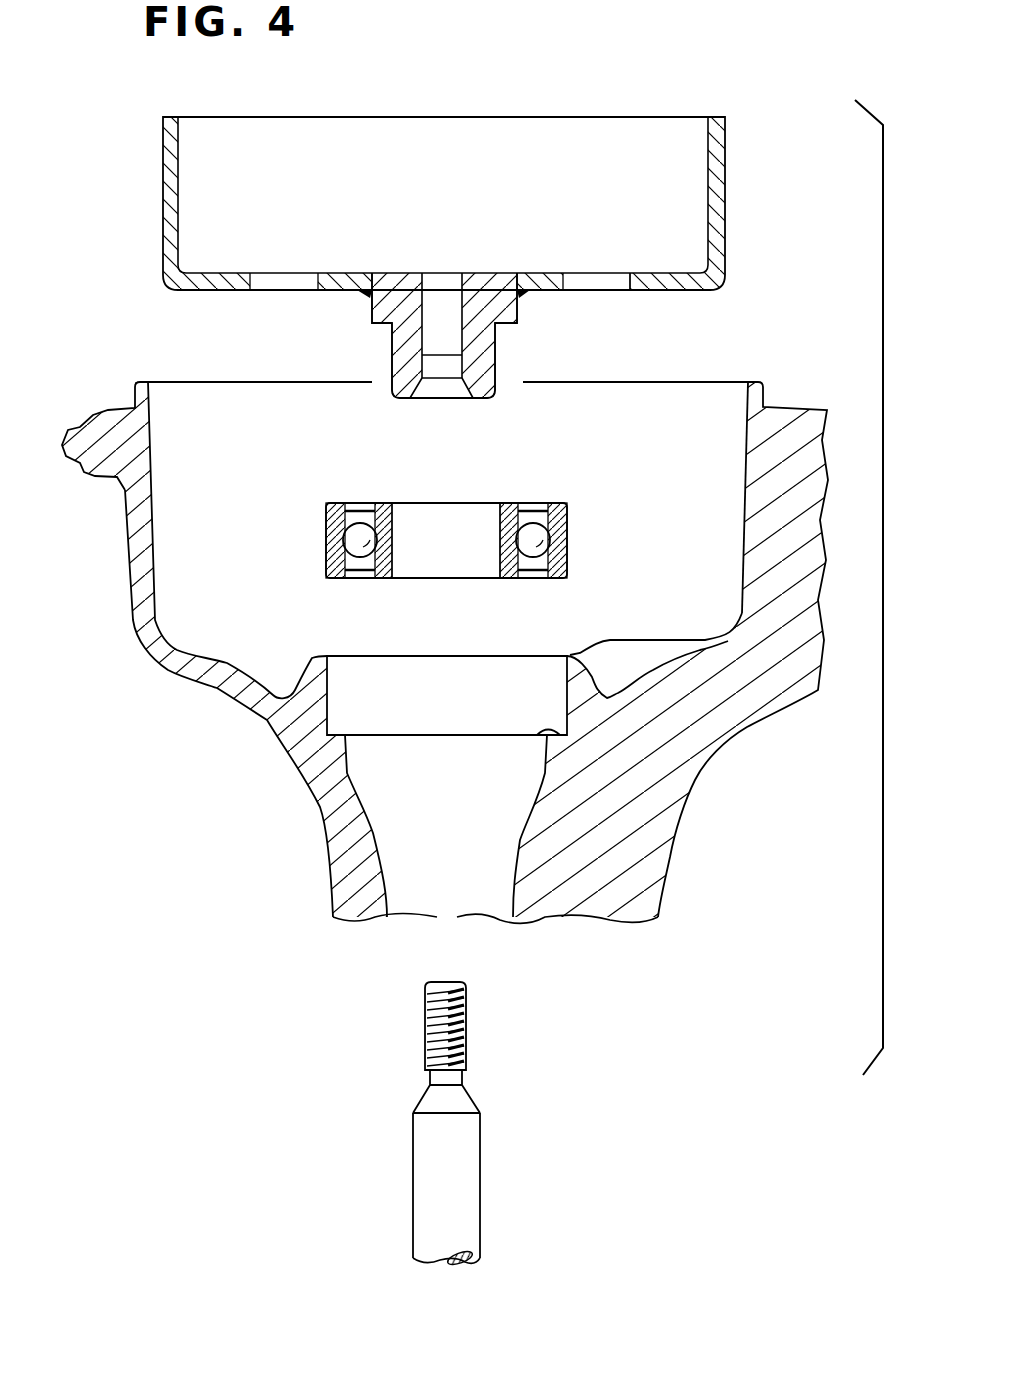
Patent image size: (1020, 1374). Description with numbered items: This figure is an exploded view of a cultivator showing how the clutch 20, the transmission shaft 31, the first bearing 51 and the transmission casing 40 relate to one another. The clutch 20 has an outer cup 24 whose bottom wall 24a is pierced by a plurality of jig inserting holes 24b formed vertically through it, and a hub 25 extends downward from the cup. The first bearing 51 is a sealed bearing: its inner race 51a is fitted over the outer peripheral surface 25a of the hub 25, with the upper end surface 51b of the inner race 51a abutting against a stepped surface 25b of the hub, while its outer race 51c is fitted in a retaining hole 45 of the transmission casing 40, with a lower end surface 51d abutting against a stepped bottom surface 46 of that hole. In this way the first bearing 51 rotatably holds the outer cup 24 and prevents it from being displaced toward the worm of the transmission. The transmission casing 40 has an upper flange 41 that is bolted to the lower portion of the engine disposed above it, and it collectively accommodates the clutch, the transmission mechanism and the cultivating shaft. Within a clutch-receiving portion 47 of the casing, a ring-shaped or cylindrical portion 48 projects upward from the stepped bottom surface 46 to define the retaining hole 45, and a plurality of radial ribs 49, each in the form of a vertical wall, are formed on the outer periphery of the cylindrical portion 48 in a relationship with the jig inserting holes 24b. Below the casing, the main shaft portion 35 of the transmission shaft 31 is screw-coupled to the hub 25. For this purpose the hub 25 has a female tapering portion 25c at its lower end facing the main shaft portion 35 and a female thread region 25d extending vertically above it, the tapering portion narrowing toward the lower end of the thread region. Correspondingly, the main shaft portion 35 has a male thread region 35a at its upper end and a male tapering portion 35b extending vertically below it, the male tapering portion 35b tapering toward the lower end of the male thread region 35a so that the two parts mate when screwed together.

The clutch 20 is at (460, 117).
The outer cup 24 is at (727, 152).
The bottom wall 24a is at (672, 292).
The jig inserting holes 24b is at (272, 272).
The hub 25 is at (500, 347).
The outer peripheral surface 25a is at (392, 357).
The stepped surface 25b is at (376, 330).
The female tapering portion 25c is at (448, 400).
The female thread region 25d is at (447, 277).
The transmission casing 40 is at (690, 850).
The upper flange 41 is at (88, 432).
The retaining hole 45 is at (567, 694).
The stepped bottom surface 46 is at (540, 733).
The clutch-receiving portion 47 is at (740, 547).
The cylindrical portion 48 is at (578, 660).
The radial ribs 49 is at (636, 655).
The first bearing 51 is at (330, 500).
The inner race 51a is at (500, 540).
The upper end surface 51b is at (510, 500).
The outer race 51c is at (567, 545).
The lower end surface 51d is at (555, 578).
The transmission shaft 31 is at (483, 1153).
The main shaft portion 35 is at (422, 1170).
The male thread region 35a is at (430, 1018).
The male tapering portion 35b is at (430, 1100).